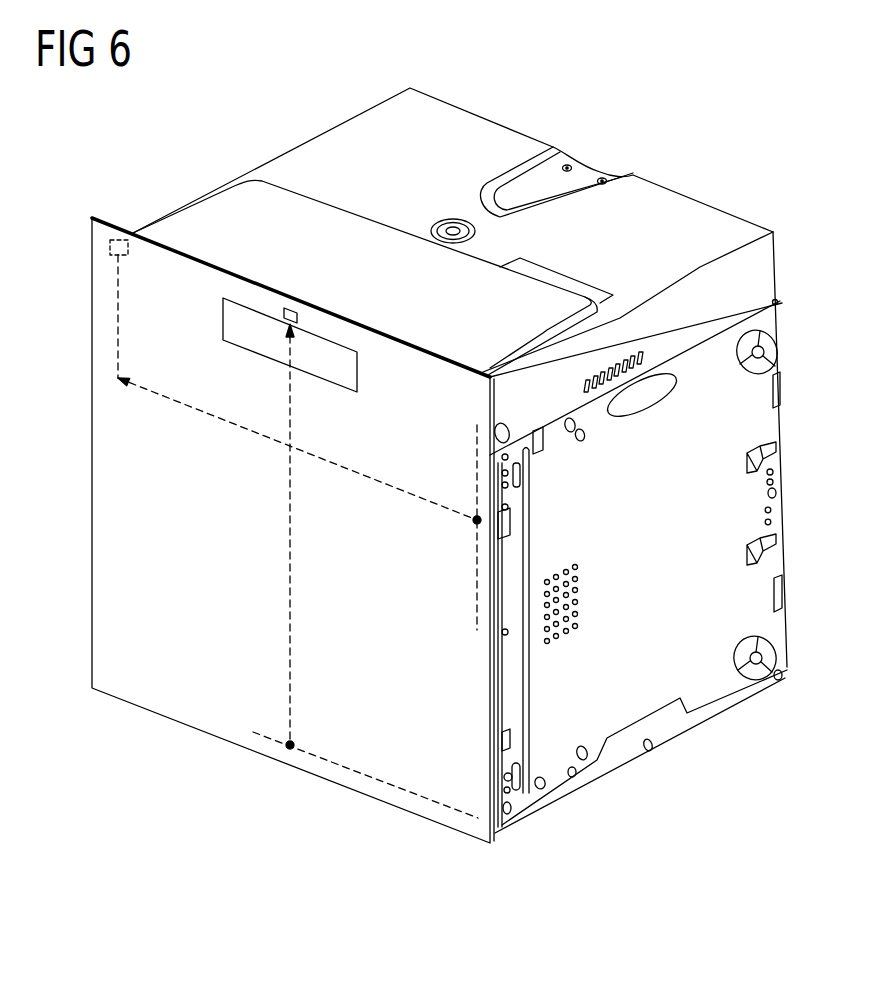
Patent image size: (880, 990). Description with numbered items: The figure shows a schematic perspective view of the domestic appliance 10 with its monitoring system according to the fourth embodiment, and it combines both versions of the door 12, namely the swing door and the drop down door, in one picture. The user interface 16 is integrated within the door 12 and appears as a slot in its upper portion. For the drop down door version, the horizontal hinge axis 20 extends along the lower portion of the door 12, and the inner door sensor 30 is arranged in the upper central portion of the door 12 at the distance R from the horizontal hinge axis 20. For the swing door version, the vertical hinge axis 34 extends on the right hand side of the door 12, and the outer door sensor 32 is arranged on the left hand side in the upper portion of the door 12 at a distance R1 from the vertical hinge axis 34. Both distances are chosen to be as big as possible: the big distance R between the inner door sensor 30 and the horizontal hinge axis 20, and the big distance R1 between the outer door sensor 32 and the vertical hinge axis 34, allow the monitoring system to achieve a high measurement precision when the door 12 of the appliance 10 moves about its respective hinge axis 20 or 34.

The domestic appliance 10 is at (680, 98).
The door 12 is at (160, 695).
The user interface 16 is at (233, 322).
The horizontal hinge axis 20 is at (350, 768).
The inner door sensor 30 is at (285, 307).
The outer door sensor 32 is at (108, 247).
The vertical hinge axis 34 is at (475, 577).
The distance R is at (290, 593).
The distance R1 is at (238, 427).